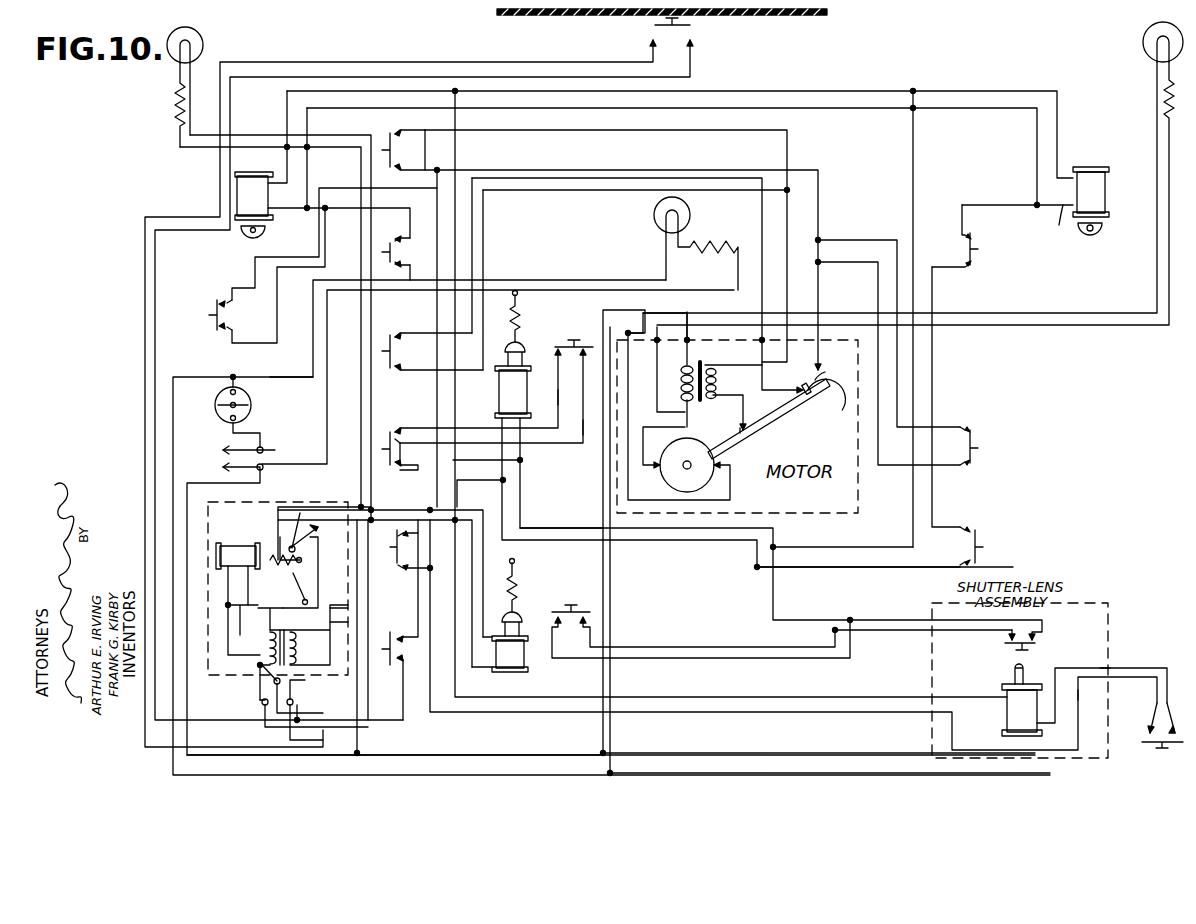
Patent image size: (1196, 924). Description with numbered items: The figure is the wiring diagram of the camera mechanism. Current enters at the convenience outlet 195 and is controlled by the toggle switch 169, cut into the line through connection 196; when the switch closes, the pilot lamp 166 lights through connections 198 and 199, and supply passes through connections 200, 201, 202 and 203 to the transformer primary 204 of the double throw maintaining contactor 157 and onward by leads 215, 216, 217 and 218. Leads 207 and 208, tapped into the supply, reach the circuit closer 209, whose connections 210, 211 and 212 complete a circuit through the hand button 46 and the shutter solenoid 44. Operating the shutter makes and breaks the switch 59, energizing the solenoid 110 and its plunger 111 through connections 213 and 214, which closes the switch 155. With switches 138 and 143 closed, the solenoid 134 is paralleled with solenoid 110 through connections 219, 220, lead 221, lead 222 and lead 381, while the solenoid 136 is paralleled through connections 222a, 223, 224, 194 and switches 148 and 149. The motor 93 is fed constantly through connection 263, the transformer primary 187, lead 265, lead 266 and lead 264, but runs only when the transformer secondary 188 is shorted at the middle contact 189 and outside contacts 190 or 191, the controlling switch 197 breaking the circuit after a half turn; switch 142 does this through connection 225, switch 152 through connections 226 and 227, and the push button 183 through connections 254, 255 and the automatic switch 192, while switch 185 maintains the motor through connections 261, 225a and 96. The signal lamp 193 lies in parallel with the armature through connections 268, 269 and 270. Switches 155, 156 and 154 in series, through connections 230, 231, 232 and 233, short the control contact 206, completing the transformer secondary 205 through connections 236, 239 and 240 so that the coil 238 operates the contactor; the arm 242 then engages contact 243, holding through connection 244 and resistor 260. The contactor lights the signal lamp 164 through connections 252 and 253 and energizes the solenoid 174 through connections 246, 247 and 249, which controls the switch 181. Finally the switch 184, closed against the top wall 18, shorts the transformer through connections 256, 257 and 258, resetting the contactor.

The top wall 18 is at (808, 16).
The switch 184 is at (672, 42).
The connection 256 is at (583, 62).
The connection 258 is at (562, 77).
The lead 222 is at (410, 92).
The connection 222a is at (912, 177).
The signal lamp 164 is at (194, 30).
The signal lamp 193 is at (1150, 43).
The solenoid 134 is at (322, 164).
The connection 224 is at (310, 176).
The switch 142 is at (411, 151).
The lead 381 is at (458, 157).
The automatic switch 192 is at (552, 171).
The connection 225 is at (651, 130).
The connection 225a is at (878, 298).
The connection 226 is at (666, 176).
The connection 227 is at (585, 192).
The pilot lamp 166 is at (690, 216).
The solenoid 136 is at (1105, 193).
The connection 223 is at (1072, 229).
The connection 261 is at (878, 240).
The switch 149 is at (967, 366).
The connection 254 is at (300, 260).
The lead 221 is at (410, 232).
The switch 138 is at (408, 258).
The manual push button 183 is at (215, 311).
The connection 255 is at (277, 303).
The circuit connection 200 is at (198, 377).
The toggle switch 169 is at (218, 401).
The connection 198 is at (270, 377).
The connection 196 is at (262, 444).
The convenience outlet 195 is at (220, 456).
The connection 199 is at (284, 465).
The connection 252 is at (360, 394).
The connection 253 is at (371, 413).
The connection 220 is at (376, 393).
The switch 152 is at (432, 351).
The solenoid 110 is at (500, 388).
The plunger 111 is at (519, 360).
The switch 155 is at (496, 391).
The connection 233 is at (556, 397).
The connection 230 is at (593, 422).
The switch 156 is at (401, 449).
The connection 219 is at (500, 492).
The lead 218 is at (524, 514).
The connection 268 is at (638, 312).
The connection 263 is at (650, 312).
The connection 269 is at (738, 304).
The lead 264 is at (688, 351).
The connection 270 is at (655, 373).
The transformer primary 187 is at (684, 387).
The transformer secondary 188 is at (716, 385).
The middle contact 189 is at (740, 431).
The outside contact 190 is at (801, 389).
The outside contact 191 is at (826, 364).
The controlling switch 197 is at (840, 418).
The connection 96 is at (766, 430).
The motor 93 is at (672, 478).
The lead 265 is at (662, 425).
The lead 266 is at (720, 500).
The switch 185 is at (958, 446).
The switch 148 is at (960, 546).
The connection 194 is at (883, 568).
The connection 246 is at (314, 499).
The connection 249 is at (380, 570).
The connection 247 is at (404, 525).
The switch 143 is at (377, 564).
The connection 210 is at (385, 580).
The circuit closer 209 is at (304, 526).
The double throw maintaining contactor 157 is at (278, 588).
The coil 238 is at (238, 574).
The resistor 260 is at (296, 567).
The arm 242 is at (291, 602).
The contact 243 is at (302, 581).
The connection 244 is at (264, 614).
The connection 239 is at (242, 619).
The connection 236 is at (255, 650).
The transformer secondary 205 is at (255, 667).
The transformer primary 204 is at (304, 645).
The lead 207 is at (355, 607).
The lead 208 is at (355, 622).
The connection 232 is at (416, 618).
The switch 154 is at (402, 648).
The circuit connection 203 is at (370, 678).
The connection 231 is at (404, 699).
The connection 240 is at (260, 678).
The control contact 206 is at (260, 688).
The connection 257 is at (308, 710).
The circuit connection 201 is at (355, 698).
The circuit connection 202 is at (210, 704).
The solenoid 174 is at (500, 616).
The switch 181 is at (782, 631).
The connection 213 is at (882, 620).
The connection 214 is at (874, 632).
The switch 59 is at (1009, 642).
The connection 211 is at (1100, 667).
The connection 212 is at (1090, 678).
The solenoid 44 is at (1005, 716).
The hand button 46 is at (1145, 744).
The lead 215 is at (545, 742).
The lead 216 is at (550, 764).
The lead 217 is at (736, 742).